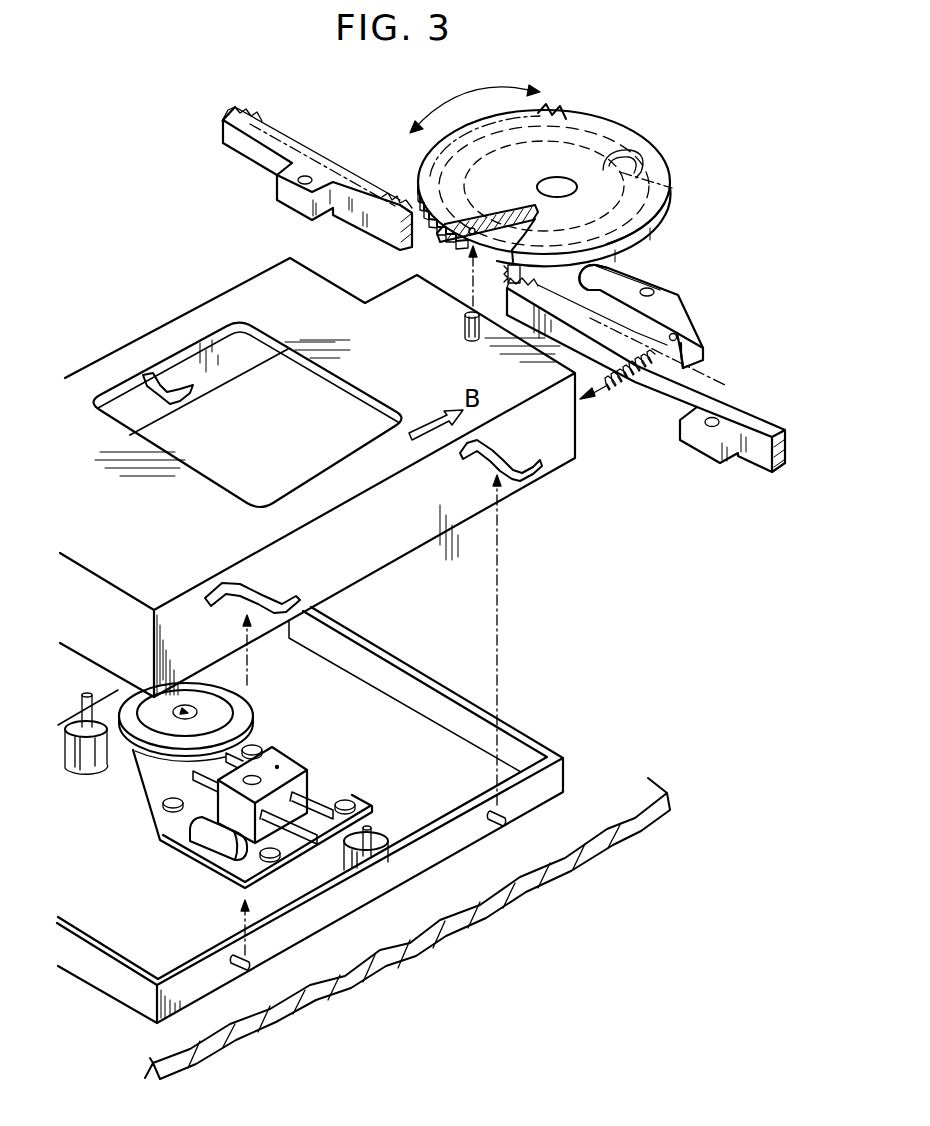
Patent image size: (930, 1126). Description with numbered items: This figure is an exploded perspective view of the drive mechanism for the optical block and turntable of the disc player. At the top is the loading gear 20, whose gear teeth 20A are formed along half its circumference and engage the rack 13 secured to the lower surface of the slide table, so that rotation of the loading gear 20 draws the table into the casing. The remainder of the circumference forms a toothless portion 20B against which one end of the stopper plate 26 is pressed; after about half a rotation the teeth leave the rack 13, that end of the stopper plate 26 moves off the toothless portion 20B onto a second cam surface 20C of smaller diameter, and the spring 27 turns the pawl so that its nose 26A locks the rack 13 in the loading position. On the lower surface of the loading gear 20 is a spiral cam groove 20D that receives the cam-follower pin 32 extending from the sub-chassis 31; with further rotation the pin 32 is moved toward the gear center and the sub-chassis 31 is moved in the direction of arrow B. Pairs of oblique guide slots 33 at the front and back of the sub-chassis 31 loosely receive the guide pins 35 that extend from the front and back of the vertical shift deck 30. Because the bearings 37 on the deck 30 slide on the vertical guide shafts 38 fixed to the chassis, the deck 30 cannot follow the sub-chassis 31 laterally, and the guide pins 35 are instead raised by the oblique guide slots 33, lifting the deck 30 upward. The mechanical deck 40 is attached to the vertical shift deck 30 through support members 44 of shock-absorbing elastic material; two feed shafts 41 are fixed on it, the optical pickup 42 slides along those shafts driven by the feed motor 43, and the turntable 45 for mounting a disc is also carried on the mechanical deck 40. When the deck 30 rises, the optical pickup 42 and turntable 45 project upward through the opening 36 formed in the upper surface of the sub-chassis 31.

The rack 13 is at (708, 385).
The loading gear 20 is at (578, 152).
The gear teeth 20A is at (413, 198).
The toothless portion 20B is at (618, 272).
The cam surface 20C is at (667, 232).
The spiral cam groove 20D is at (486, 214).
The stopper plate 26 is at (658, 293).
The nose 26A is at (695, 342).
The spring 27 is at (630, 388).
The vertical shift deck 30 is at (520, 758).
The sub-chassis 31 is at (557, 443).
The cam-follower pin 32 is at (466, 329).
The oblique guide slots 33 is at (160, 383).
The guide pins 35 is at (507, 818).
The opening 36 is at (362, 435).
The bearings 37 is at (80, 764).
The vertical guide shafts 38 is at (84, 702).
The mechanical deck 40 is at (230, 882).
The feed shafts 41 is at (308, 778).
The optical pickup 42 is at (287, 762).
The feed motor 43 is at (203, 827).
The support members 44 is at (257, 746).
The turntable 45 is at (237, 698).